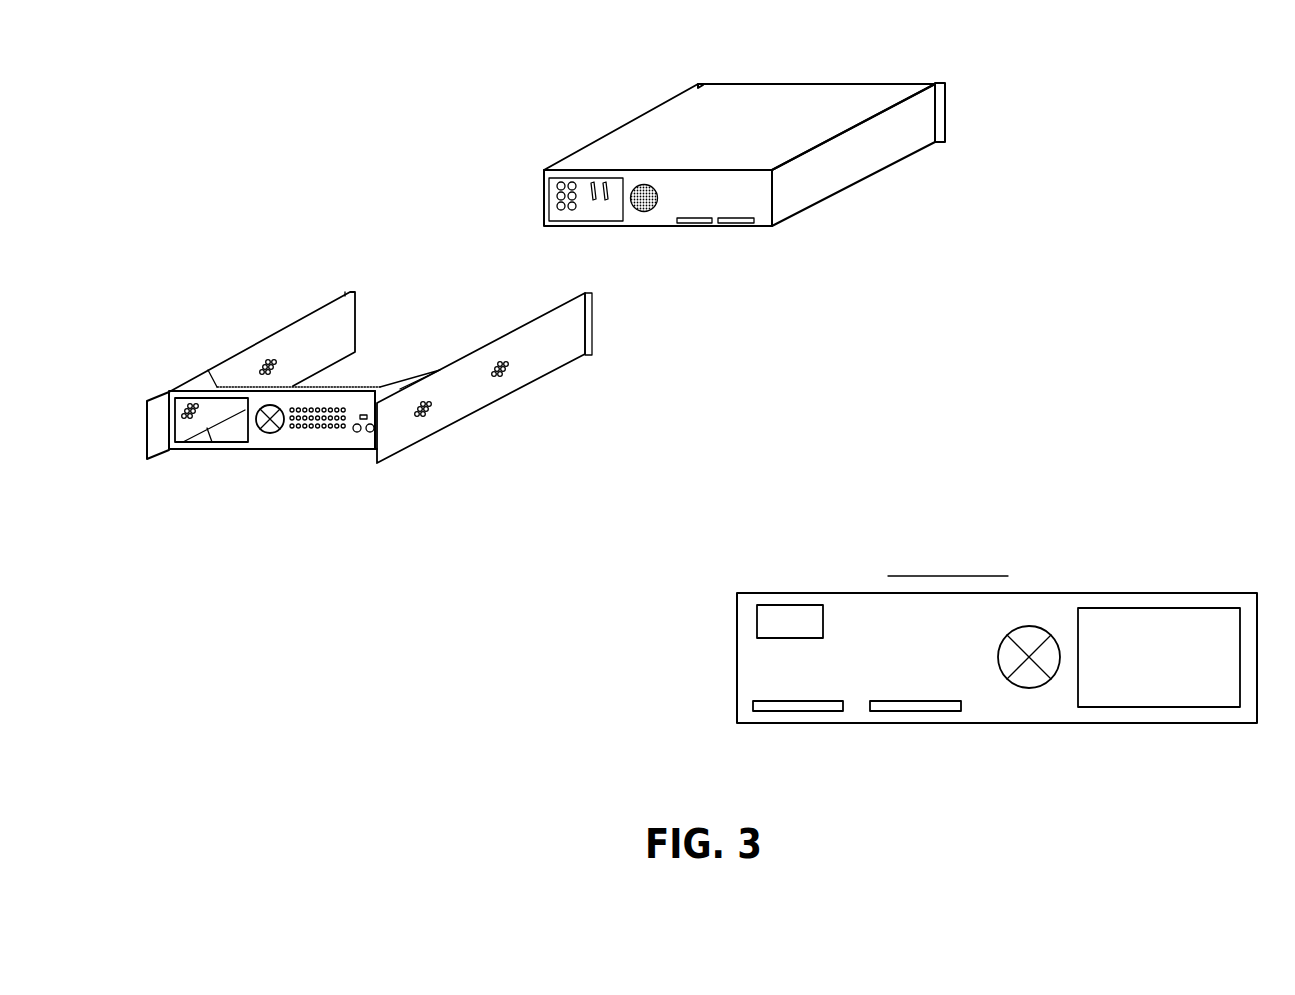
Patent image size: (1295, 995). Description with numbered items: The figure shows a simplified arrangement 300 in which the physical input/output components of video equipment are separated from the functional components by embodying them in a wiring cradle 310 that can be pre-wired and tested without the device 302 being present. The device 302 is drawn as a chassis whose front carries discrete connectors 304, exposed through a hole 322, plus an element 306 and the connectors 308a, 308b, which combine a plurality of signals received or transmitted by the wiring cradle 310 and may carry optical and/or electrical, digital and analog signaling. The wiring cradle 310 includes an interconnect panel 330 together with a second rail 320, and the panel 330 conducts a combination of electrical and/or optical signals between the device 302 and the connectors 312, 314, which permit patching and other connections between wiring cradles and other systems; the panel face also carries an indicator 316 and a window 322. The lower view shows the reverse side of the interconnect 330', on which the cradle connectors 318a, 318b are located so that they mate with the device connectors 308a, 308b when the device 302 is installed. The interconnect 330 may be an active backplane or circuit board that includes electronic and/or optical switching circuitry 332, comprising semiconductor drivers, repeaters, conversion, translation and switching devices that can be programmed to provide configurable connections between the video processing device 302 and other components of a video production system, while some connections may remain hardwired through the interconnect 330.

The modular computing system 300 is at (178, 95).
The device 302 is at (655, 108).
The discrete connectors 304 is at (549, 198).
The speaker 306 is at (640, 214).
The connector 308a is at (737, 227).
The connector 308b is at (693, 225).
The wiring cradle 310 is at (318, 310).
The connector 312 is at (291, 448).
The connector 314 is at (367, 470).
The indicator light 316 is at (272, 433).
The cradle connector 318a is at (786, 711).
The cradle connector 318b is at (915, 711).
The right rail 320 is at (517, 388).
The hole 322 is at (218, 398).
The interconnect panel 330 is at (293, 471).
The interconnect reverse side 330' is at (897, 638).
The switching circuitry 332 is at (786, 605).